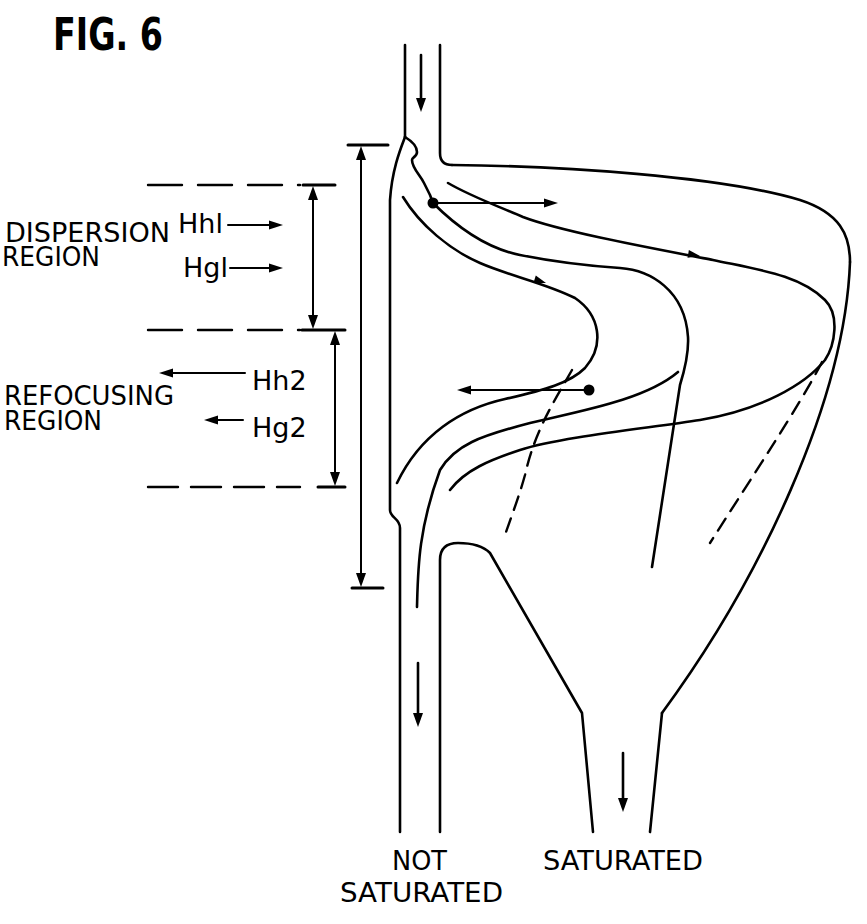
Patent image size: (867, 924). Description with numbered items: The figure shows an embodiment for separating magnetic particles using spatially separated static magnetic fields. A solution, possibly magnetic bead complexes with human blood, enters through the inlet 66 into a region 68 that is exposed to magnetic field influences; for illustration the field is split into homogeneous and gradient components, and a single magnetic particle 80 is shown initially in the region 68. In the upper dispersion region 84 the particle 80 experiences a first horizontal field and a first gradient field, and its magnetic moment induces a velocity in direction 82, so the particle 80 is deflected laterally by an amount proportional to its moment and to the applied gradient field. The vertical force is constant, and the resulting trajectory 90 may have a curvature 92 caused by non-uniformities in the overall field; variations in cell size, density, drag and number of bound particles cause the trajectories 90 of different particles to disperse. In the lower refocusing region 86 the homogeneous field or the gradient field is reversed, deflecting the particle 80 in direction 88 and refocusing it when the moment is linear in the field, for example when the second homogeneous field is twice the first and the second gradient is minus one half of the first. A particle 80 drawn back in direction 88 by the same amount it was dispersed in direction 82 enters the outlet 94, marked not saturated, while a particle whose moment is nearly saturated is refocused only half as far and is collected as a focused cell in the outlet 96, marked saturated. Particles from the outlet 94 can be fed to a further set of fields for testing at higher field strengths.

The inlet 66 is at (443, 136).
The region 68 is at (358, 533).
The magnetic particle 80 is at (405, 145).
The direction 82 is at (527, 204).
The dispersion region 84 is at (308, 227).
The refocusing region 86 is at (332, 446).
The direction 88 is at (510, 390).
The trajectory 90 is at (702, 290).
The curvature 92 is at (622, 268).
The outlet 94 is at (416, 597).
The outlet 96 is at (658, 766).